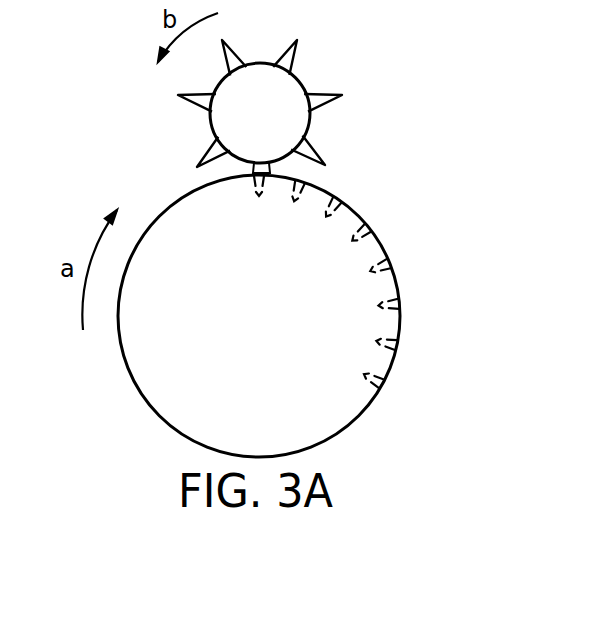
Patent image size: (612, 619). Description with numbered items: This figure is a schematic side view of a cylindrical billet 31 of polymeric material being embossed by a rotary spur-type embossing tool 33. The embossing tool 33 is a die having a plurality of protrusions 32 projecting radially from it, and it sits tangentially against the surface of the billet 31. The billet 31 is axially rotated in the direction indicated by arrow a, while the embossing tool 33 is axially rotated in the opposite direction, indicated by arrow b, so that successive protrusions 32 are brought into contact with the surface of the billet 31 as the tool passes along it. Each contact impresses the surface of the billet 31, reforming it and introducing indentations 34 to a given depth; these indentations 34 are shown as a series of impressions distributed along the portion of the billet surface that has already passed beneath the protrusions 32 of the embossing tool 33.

The billet 31 is at (220, 347).
The protrusions 32 is at (313, 147).
The embossing tool 33 is at (265, 110).
The indentations 34 is at (367, 223).